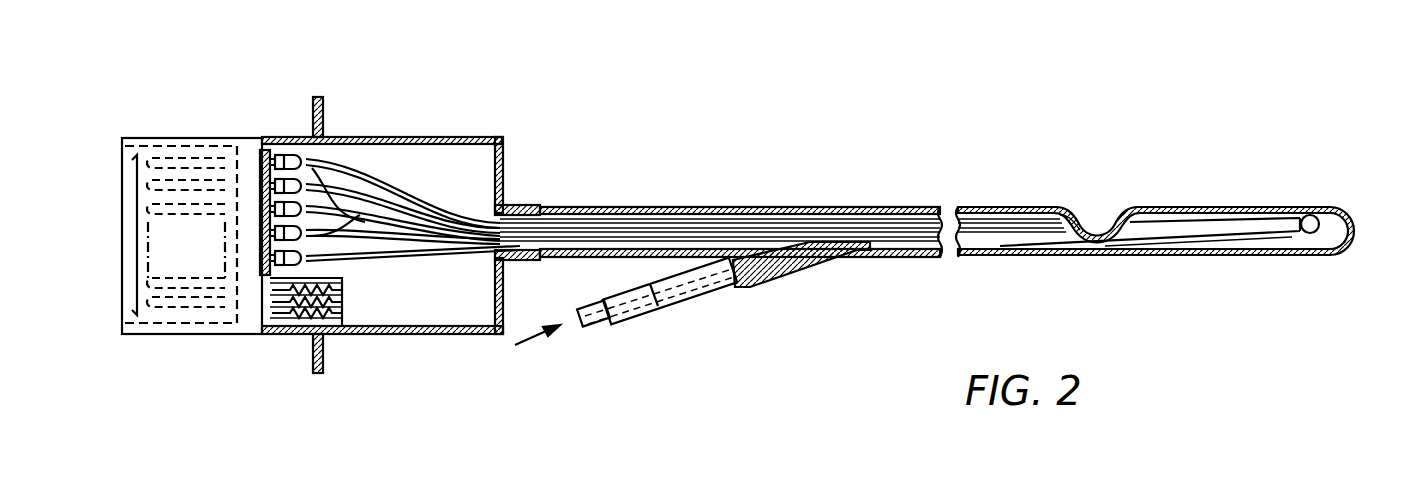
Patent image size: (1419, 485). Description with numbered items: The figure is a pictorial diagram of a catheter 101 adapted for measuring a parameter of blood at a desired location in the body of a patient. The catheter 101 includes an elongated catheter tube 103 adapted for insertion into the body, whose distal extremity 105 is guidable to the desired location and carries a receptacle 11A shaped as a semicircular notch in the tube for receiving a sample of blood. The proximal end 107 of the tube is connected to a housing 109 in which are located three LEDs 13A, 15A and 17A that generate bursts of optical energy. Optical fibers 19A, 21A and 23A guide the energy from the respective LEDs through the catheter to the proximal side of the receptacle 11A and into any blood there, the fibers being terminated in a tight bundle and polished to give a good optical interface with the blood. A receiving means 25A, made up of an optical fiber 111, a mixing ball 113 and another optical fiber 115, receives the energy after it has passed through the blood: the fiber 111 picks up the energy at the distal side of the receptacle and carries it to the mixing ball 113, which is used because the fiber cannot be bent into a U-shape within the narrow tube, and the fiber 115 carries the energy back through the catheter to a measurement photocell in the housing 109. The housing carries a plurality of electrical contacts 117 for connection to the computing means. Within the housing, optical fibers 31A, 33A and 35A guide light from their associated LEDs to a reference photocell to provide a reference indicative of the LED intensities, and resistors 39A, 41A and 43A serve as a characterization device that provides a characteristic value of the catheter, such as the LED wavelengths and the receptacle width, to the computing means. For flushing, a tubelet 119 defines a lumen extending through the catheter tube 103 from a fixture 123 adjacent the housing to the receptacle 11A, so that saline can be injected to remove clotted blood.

The catheter 101 is at (716, 190).
The catheter tube 103 is at (880, 208).
The distal extremity 105 is at (1362, 204).
The proximal end 107 is at (557, 199).
The housing 109 is at (496, 136).
The optical fiber 111 is at (1247, 218).
The mixing ball 113 is at (1312, 240).
The optical fiber 115 is at (560, 250).
The electrical contacts 117 is at (123, 240).
The tubelet 119 is at (597, 330).
The fixture 123 is at (790, 286).
The receptacle 11A is at (1097, 212).
The LED 13A is at (296, 156).
The LED 15A is at (300, 178).
The LED 17A is at (290, 207).
The optical fiber 19A is at (407, 217).
The optical fiber 21A is at (437, 204).
The optical fiber 23A is at (404, 236).
The receiving means 25A is at (1294, 236).
The optical fiber 31A is at (374, 202).
The optical fiber 33A is at (332, 218).
The optical fiber 35A is at (328, 224).
The resistor 39A is at (327, 293).
The resistor 41A is at (287, 302).
The resistor 43A is at (300, 312).